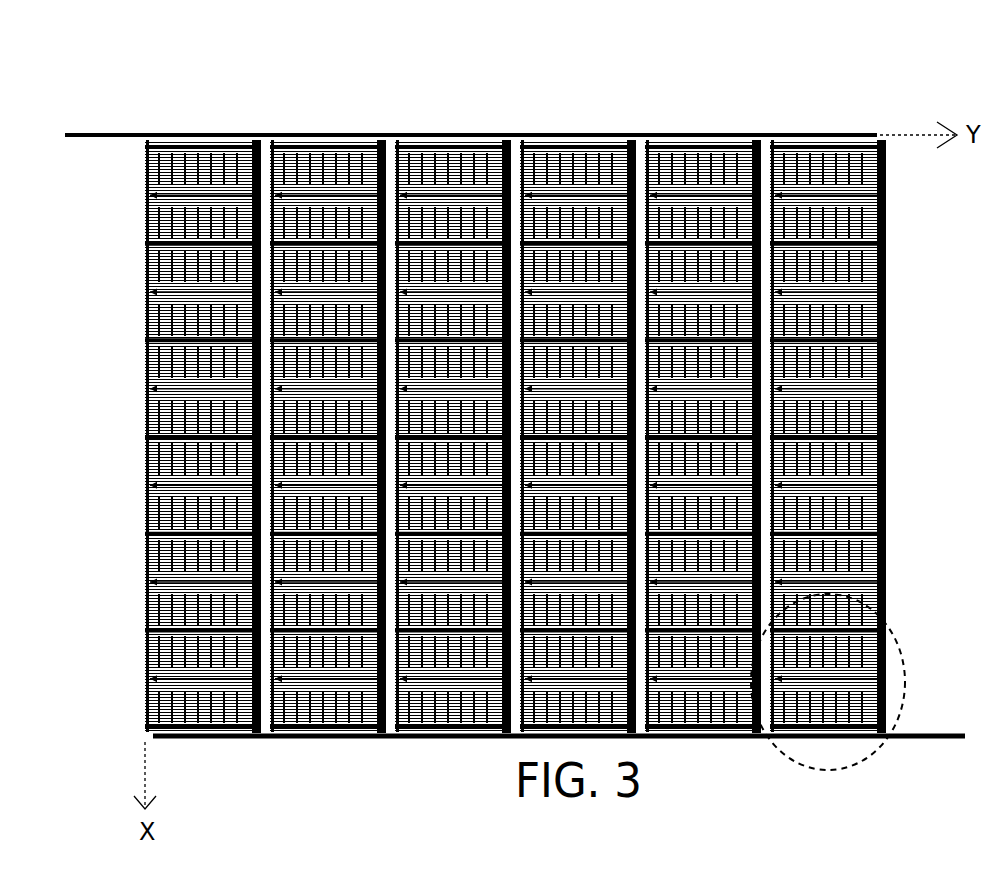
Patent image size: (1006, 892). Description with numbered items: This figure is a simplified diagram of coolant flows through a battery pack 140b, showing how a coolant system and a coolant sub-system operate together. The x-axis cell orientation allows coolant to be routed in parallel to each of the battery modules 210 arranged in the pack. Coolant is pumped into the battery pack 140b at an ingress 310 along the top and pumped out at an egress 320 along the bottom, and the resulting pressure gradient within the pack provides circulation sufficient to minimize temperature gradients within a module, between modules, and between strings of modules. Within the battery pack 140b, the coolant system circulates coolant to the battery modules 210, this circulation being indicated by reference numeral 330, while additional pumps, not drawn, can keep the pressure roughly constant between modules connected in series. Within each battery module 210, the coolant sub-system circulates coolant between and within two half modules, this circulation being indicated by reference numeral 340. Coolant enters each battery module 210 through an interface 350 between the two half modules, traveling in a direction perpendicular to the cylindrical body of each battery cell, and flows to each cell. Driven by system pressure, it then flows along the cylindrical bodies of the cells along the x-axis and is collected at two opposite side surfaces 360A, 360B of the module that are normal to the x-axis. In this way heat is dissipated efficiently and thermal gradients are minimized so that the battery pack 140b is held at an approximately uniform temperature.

The battery pack 140b is at (465, 386).
The ingress 310 is at (82, 138).
The egress 320 is at (922, 741).
The circulation of coolant to battery modules 330 is at (153, 436).
The circulation within battery module 340 is at (152, 483).
The interface 350 is at (174, 485).
The side surface 360A is at (148, 441).
The side surface 360B is at (152, 527).
The battery module 210 is at (905, 668).